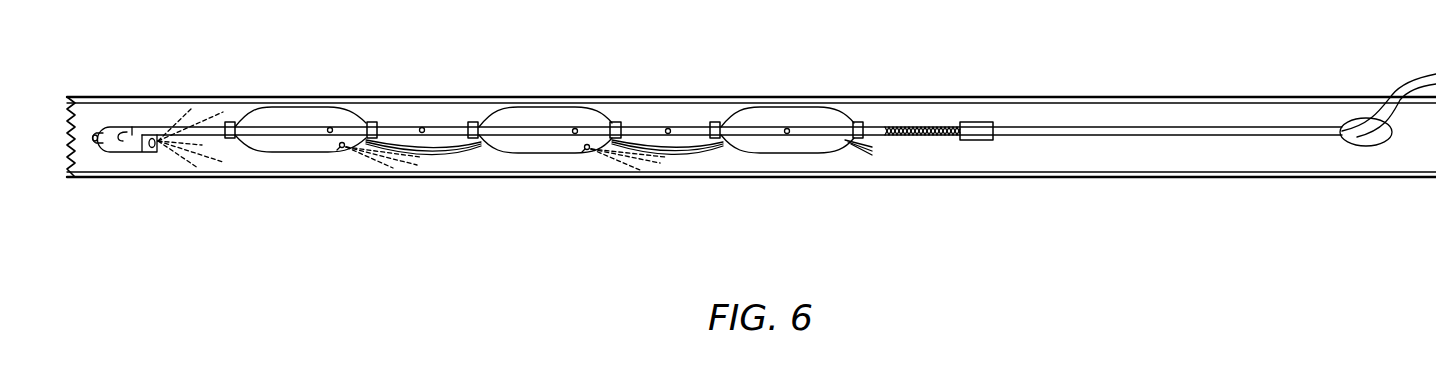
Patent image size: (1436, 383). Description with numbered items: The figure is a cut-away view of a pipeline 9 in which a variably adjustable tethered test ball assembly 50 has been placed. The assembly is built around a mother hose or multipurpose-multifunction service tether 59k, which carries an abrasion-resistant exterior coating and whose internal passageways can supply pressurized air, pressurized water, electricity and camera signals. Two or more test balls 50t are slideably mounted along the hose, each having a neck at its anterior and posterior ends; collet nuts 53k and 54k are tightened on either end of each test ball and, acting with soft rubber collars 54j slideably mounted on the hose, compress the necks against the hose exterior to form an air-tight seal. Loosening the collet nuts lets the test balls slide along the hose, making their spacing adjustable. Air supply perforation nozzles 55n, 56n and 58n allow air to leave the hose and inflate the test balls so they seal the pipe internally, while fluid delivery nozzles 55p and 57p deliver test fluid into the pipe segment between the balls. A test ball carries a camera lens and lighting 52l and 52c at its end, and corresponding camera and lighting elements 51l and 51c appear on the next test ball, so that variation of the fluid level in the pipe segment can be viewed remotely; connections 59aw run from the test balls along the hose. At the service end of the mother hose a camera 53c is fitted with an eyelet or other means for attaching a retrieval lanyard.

The tubular housing 9 is at (1150, 175).
The drive shaft 50 is at (447, 148).
The test ball 50t is at (289, 108).
The lighting 52l is at (364, 121).
The collet nut 53k is at (472, 122).
The connector 51l is at (604, 122).
The collet nut 54k is at (625, 122).
The soft rubber collar 54j is at (858, 122).
The camera 53c is at (128, 148).
The air supply perforation nozzle 55n is at (327, 132).
The camera lens 52c is at (340, 148).
The fluid delivery nozzle 55p is at (422, 134).
The air supply perforation nozzle 56n is at (575, 135).
The camera port 51c is at (585, 150).
The fluid delivery nozzle 57p is at (668, 135).
The air supply perforation nozzle 58n is at (787, 135).
The wires 59aw is at (855, 148).
The service tether 59k is at (917, 137).